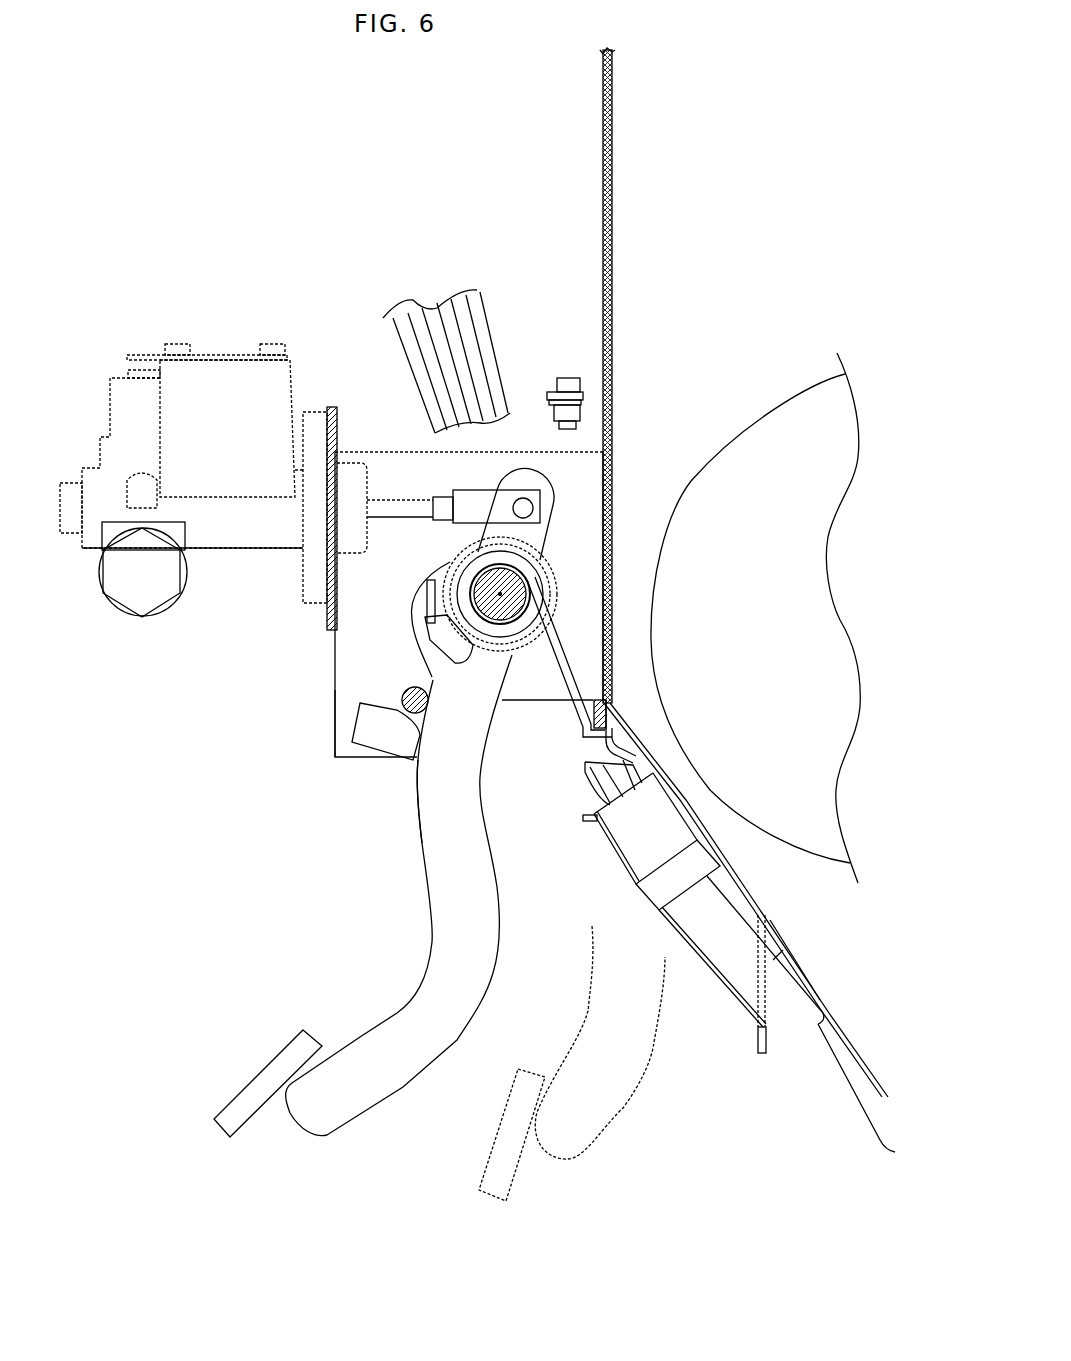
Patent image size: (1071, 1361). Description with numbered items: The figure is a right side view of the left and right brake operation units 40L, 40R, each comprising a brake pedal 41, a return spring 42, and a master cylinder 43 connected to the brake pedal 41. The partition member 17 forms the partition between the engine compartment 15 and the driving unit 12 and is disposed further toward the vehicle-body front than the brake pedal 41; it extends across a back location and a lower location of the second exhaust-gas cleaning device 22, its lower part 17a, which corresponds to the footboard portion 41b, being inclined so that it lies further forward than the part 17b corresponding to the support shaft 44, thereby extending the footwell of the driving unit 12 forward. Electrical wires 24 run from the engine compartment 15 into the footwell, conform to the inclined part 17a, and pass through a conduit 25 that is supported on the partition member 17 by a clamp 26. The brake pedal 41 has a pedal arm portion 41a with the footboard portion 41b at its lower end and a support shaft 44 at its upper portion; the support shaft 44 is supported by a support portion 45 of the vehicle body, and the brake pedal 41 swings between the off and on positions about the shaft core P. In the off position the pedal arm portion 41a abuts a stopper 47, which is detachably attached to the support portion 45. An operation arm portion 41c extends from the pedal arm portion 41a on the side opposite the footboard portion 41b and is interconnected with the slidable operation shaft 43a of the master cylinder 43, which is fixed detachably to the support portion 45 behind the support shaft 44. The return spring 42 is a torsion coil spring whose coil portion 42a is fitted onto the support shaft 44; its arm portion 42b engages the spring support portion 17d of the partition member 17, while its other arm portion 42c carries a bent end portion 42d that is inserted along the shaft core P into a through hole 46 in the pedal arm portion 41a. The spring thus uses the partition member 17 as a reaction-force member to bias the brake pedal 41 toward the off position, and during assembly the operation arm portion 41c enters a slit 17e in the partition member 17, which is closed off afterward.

The driving unit 12 is at (180, 167).
The engine compartment 15 is at (714, 189).
The partition member 17 is at (599, 213).
The part of the partition member 17a is at (755, 890).
The part of the partition member 17b is at (610, 455).
The spring support portion 17d is at (620, 710).
The slit 17e is at (612, 565).
The second exhaust-gas cleaning device 22 is at (757, 402).
The electrical wires 24 is at (425, 355).
The conduit 25 is at (765, 1060).
The clamp 26 is at (660, 900).
The right brake operation unit 40R is at (385, 1013).
The left brake operation unit 40L is at (237, 893).
The brake pedal 41 is at (395, 1010).
The pedal arm portion 41a is at (430, 888).
The footboard portion 41b is at (255, 1082).
The operation arm portion 41c is at (553, 507).
The return spring 42 is at (442, 556).
The coil portion 42a is at (453, 567).
The arm portion 42b is at (585, 670).
The arm portion 42c is at (341, 629).
The bent end portion 42d is at (420, 603).
The master cylinder 43 is at (230, 372).
The operation shaft 43a is at (427, 493).
The support shaft 44 is at (530, 593).
The support portion 45 is at (340, 684).
The through hole 46 is at (447, 640).
The stopper 47 is at (415, 702).
The shaft core P is at (533, 545).